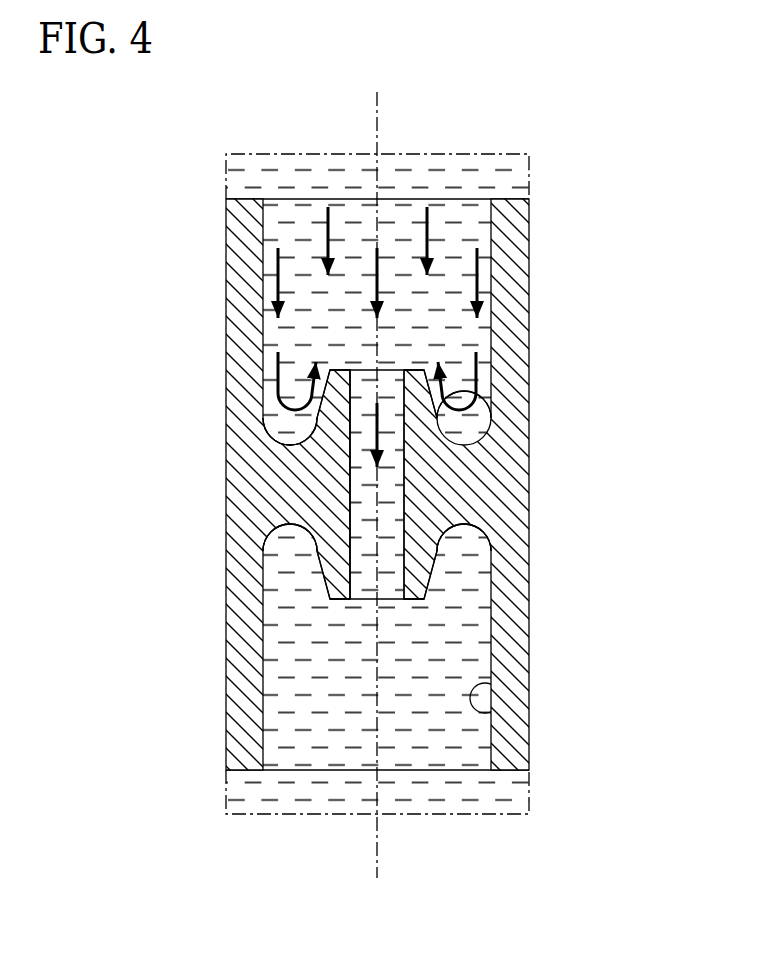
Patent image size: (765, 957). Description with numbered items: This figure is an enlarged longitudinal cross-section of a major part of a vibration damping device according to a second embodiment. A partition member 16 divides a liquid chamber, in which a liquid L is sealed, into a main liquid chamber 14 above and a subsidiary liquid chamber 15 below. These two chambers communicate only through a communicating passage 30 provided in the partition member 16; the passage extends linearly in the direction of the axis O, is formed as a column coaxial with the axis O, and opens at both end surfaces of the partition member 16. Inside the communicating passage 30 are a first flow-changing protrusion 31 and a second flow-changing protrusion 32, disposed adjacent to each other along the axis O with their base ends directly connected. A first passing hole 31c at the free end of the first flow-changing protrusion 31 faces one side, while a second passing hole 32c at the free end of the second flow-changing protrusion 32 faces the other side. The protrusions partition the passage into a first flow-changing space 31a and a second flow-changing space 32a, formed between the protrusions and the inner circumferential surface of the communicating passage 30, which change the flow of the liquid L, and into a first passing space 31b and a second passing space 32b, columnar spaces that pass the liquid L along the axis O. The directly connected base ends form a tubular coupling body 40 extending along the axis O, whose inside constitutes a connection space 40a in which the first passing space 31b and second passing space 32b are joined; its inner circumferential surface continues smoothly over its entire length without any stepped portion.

The main liquid chamber 14 is at (531, 177).
The subsidiary liquid chamber 15 is at (531, 793).
The partition member 16 is at (531, 640).
The communicating passage 30 is at (497, 711).
The first flow-changing protrusion 31 is at (424, 393).
The first flow-changing space 31a is at (288, 420).
The first passing space 31b is at (357, 428).
The first passing hole 31c is at (350, 373).
The second flow-changing protrusion 32 is at (433, 541).
The second flow-changing space 32a is at (288, 557).
The second passing space 32b is at (357, 543).
The second passing hole 32c is at (352, 600).
The coupling body 40 is at (458, 484).
The connection space 40a is at (214, 484).
The axis O is at (377, 118).
The liquid L is at (454, 172).